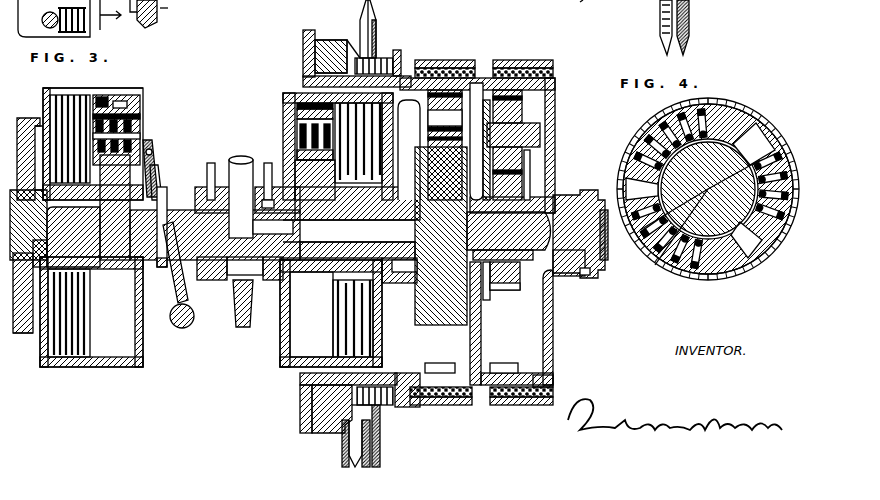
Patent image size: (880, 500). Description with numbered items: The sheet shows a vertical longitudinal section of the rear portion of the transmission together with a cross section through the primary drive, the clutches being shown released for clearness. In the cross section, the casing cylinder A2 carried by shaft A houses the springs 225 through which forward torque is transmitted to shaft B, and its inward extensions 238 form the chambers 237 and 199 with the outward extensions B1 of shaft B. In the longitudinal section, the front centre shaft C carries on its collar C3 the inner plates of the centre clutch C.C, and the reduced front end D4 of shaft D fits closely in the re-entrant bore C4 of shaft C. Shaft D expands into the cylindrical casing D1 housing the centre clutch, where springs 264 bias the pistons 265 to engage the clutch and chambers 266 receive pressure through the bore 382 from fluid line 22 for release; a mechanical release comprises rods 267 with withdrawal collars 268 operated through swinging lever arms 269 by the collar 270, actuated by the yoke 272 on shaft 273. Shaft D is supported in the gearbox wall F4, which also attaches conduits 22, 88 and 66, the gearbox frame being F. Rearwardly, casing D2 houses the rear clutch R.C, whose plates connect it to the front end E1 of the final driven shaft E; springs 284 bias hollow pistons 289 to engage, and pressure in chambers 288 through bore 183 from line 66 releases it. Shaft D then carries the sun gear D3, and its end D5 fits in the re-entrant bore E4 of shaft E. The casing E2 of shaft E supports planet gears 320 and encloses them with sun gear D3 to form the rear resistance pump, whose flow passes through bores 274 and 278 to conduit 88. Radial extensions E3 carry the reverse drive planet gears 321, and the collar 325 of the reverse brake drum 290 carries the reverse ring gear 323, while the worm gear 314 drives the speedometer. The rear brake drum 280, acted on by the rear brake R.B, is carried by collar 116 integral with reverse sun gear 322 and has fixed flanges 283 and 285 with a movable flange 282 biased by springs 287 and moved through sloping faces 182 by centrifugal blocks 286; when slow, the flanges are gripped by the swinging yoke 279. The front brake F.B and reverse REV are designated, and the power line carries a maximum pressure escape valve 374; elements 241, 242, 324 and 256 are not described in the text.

In FIG. 3, the maximum pressure escape valve 374 is at (74, 33).
In FIG. 3, the gearbox frame F is at (168, 7).
In FIG. 3, the centre clutch C.C is at (72, 93).
In FIG. 3, the pistons 265 is at (105, 108).
In FIG. 3, the cylindrical casing D1 is at (128, 90).
In FIG. 3, the springs 264 is at (95, 120).
In FIG. 3, the chambers 266 is at (127, 105).
In FIG. 3, the rods 267 is at (132, 125).
In FIG. 3, the withdrawal collars 268 is at (153, 150).
In FIG. 3, the swinging lever arms 269 is at (158, 172).
In FIG. 3, the collar 270 is at (178, 196).
In FIG. 3, the fluid line 22 is at (211, 163).
In FIG. 3, the conduit 88 is at (238, 158).
In FIG. 3, the line 66 is at (268, 163).
In FIG. 3, the chambers 288 is at (297, 107).
In FIG. 3, the hollow pistons 289 is at (297, 118).
In FIG. 3, the springs 284 is at (300, 140).
In FIG. 3, the laterally movable annular flange 282 is at (360, 22).
In FIG. 3, the fixed flange 283 is at (374, 22).
In FIG. 3, the sloping faces 182 is at (348, 40).
In FIG. 3, the fixed flange 285 is at (303, 42).
In FIG. 3, the movable blocks 286 is at (312, 62).
In FIG. 3, the rear brake drum 280 is at (303, 81).
In FIG. 3, the springs 287 is at (378, 58).
In FIG. 3, the rear brake R.B is at (447, 66).
In FIG. 3, the planet gears 320 is at (470, 95).
In FIG. 3, the reverse REV is at (523, 66).
In FIG. 3, the reverse drive planet gears 321 is at (542, 105).
In FIG. 3, the front brake F.B is at (571, 11).
In FIG. 3, the shaft 241 is at (660, 8).
In FIG. 3, the sleeve 242 is at (690, 2).
In FIG. 3, the casing E2 is at (430, 128).
In FIG. 3, the radial extensions E3 is at (535, 140).
In FIG. 3, the end of shaft D D5 is at (532, 225).
In FIG. 3, the central collar 325 is at (556, 225).
In FIG. 3, the bore 278 is at (349, 230).
In FIG. 3, the bore 274 is at (349, 234).
In FIG. 3, the re-entrant bore C4 is at (38, 205).
In FIG. 3, the front centre shaft C is at (50, 235).
In FIG. 3, the reduced front end D4 is at (50, 255).
In FIG. 3, the collar C3 is at (122, 272).
In FIG. 3, the bore 382 is at (120, 305).
In FIG. 3, the shaft D is at (160, 272).
In FIG. 3, the yoke 272 is at (186, 294).
In FIG. 3, the shaft 273 is at (178, 330).
In FIG. 3, the bore 183 is at (268, 282).
In FIG. 3, the front collar shaped end E1 is at (332, 275).
In FIG. 3, the gearbox wall F4 is at (243, 328).
In FIG. 3, the cylindrical casing D2 is at (284, 360).
In FIG. 3, the sun gear D3 is at (422, 295).
In FIG. 3, the rear clutch R.C is at (360, 346).
In FIG. 3, the bearing 324 is at (440, 364).
In FIG. 3, the central collar 116 is at (486, 282).
In FIG. 3, the reverse sun gear 322 is at (510, 292).
In FIG. 3, the re-entrant bore E4 is at (543, 287).
In FIG. 3, the reverse ring gear 323 is at (505, 364).
In FIG. 3, the worm gear 314 is at (582, 278).
In FIG. 3, the final driven shaft E is at (601, 266).
In FIG. 3, the reverse brake drum 290 is at (553, 380).
In FIG. 3, the swinging yoke 279 is at (342, 432).
In FIG. 3, the wall 256 is at (22, 337).
In FIG. 4, the chamber 199 is at (668, 126).
In FIG. 4, the chamber 237 is at (752, 128).
In FIG. 4, the inward extensions 238 is at (760, 132).
In FIG. 4, the springs 225 is at (660, 270).
In FIG. 4, the casing cylinder A2 is at (694, 282).
In FIG. 4, the shaft B is at (722, 212).
In FIG. 4, the outward extensions B1 is at (737, 228).